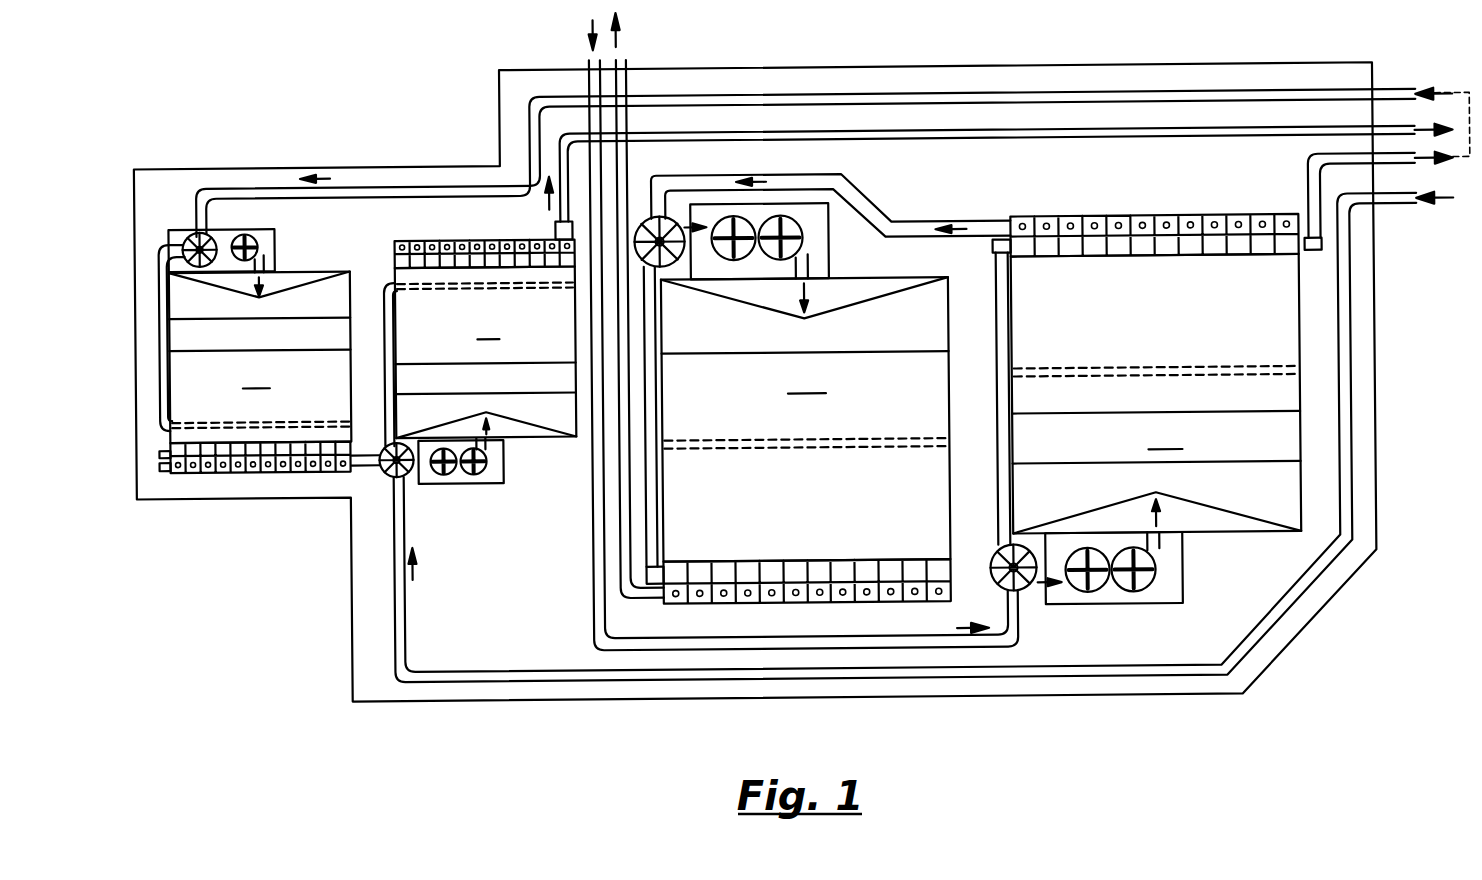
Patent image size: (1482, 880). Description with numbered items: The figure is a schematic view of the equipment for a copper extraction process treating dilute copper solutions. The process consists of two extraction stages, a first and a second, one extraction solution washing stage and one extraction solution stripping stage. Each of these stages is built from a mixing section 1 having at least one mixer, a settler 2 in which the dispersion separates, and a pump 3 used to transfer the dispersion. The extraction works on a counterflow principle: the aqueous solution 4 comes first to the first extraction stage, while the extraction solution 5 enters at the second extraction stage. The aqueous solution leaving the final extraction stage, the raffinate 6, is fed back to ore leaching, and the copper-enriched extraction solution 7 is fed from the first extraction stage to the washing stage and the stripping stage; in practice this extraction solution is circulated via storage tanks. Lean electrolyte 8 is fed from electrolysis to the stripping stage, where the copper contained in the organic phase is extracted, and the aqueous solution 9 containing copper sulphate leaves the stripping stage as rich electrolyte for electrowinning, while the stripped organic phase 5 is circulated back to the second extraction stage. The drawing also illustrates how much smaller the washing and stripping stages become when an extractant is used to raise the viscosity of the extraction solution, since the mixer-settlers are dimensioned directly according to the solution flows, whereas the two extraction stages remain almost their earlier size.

The mixing section 1 is at (280, 238).
The settler 2 is at (176, 343).
The pump 3 is at (190, 233).
The aqueous solution 4 is at (593, 30).
The extraction solution 5 is at (580, 262).
The raffinate 6 is at (624, 42).
The copper-enriched extraction solution 7 is at (272, 186).
The lean electrolyte 8 is at (396, 621).
The aqueous solution containing copper sulphate 9 is at (560, 156).